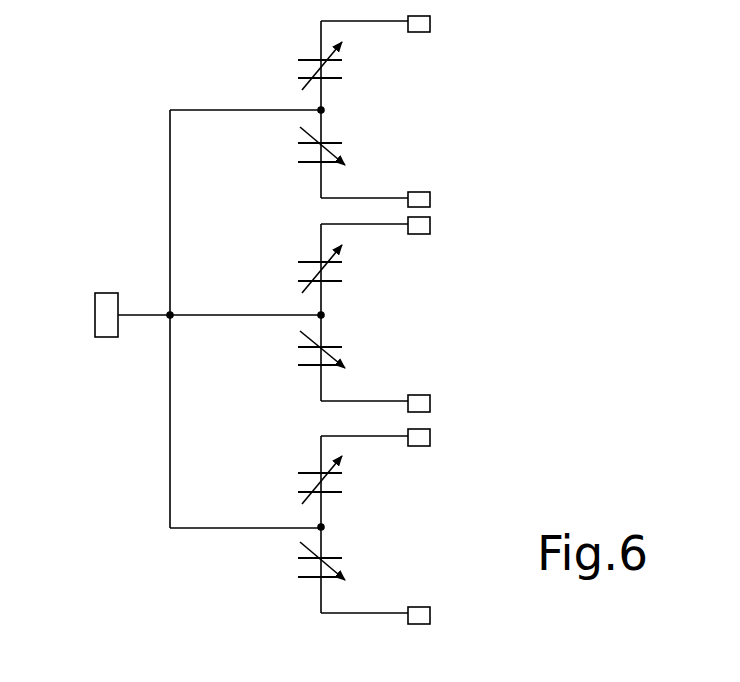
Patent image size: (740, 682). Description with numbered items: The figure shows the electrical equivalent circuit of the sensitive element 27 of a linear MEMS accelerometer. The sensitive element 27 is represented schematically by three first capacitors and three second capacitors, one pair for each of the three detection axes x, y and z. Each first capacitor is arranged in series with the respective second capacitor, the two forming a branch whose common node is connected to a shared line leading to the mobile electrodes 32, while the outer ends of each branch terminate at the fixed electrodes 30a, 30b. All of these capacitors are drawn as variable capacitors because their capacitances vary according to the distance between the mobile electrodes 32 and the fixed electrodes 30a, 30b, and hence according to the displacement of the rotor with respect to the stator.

The sensitive element 27 is at (507, 192).
The fixed electrode 30a is at (415, 32).
The fixed electrode 30b is at (415, 192).
The mobile electrodes 32 is at (112, 302).